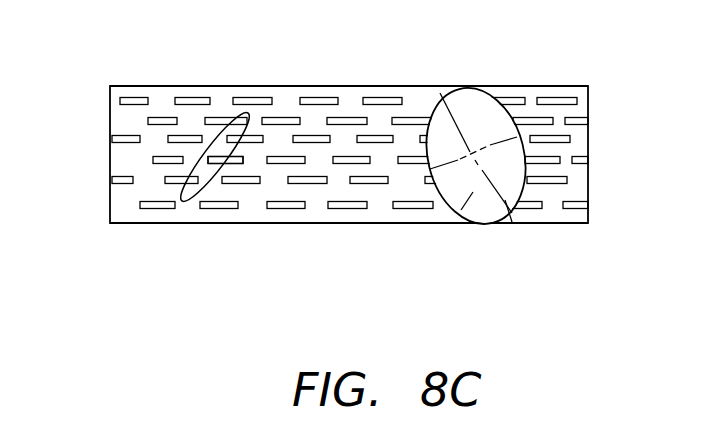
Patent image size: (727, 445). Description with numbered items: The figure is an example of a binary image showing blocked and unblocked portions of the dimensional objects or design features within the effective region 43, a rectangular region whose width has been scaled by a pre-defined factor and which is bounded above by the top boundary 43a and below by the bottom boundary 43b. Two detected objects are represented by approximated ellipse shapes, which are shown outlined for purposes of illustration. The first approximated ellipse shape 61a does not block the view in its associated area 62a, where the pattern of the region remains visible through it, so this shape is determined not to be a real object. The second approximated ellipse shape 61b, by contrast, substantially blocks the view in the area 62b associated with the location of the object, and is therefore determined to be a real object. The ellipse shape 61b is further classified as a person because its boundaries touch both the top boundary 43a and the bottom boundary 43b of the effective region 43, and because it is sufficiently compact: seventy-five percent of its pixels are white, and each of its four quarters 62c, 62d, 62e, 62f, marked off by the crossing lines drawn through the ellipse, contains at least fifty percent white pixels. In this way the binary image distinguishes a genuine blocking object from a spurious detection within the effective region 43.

The effective region 43 is at (588, 144).
The top boundary of the effective region 43a is at (577, 86).
The bottom boundary of the effective region 43b is at (578, 223).
The approximated ellipse shape 61a is at (197, 177).
The area 62a is at (248, 112).
The approximated ellipse shape 61b is at (428, 108).
The area 62b is at (486, 96).
The quarter of the ellipse 62c is at (432, 103).
The quarter of the ellipse 62d is at (478, 115).
The quarter of the ellipse 62e is at (461, 210).
The quarter of the ellipse 62f is at (512, 222).